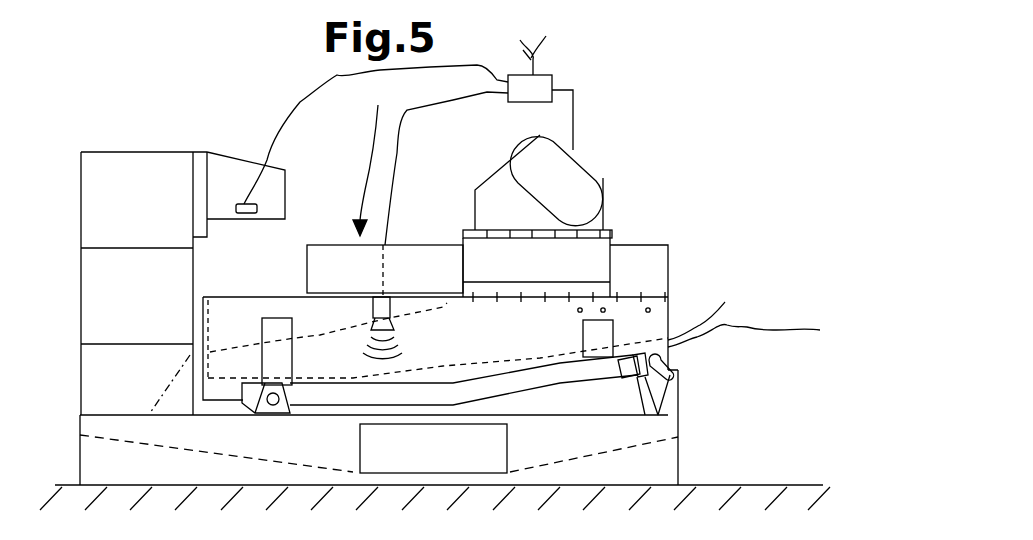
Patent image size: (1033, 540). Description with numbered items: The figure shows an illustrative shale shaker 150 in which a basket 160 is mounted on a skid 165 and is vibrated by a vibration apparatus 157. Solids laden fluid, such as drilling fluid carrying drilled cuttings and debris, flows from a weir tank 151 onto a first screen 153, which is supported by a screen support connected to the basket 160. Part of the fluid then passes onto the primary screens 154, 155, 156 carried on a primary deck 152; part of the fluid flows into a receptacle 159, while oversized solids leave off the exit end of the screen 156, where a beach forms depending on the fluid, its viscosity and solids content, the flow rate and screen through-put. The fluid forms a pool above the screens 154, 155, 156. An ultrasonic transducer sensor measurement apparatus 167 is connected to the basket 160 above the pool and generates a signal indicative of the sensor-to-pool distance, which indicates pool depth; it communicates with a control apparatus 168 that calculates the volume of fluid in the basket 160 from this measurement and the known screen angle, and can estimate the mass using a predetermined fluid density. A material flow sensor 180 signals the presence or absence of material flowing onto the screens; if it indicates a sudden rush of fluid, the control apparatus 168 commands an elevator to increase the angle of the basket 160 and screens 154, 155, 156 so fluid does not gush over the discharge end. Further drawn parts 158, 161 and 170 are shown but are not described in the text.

The shale shaker 150 is at (375, 157).
The weir tank 151 is at (148, 183).
The primary deck 152 is at (726, 310).
The first screen 153 is at (417, 312).
The primary screen 154 is at (353, 377).
The primary screen 155 is at (427, 370).
The primary screen 156 is at (555, 357).
The vibration apparatus 157 is at (567, 175).
The pivot 158 is at (647, 394).
The receptacle 159 is at (257, 458).
The basket 160 is at (240, 327).
The support block 161 is at (273, 393).
The skid 165 is at (660, 463).
The ultrasonic transducer sensor measurement apparatus 167 is at (373, 296).
The control apparatus 168 is at (552, 75).
The control unit 170 is at (412, 245).
The material flow sensor 180 is at (247, 204).